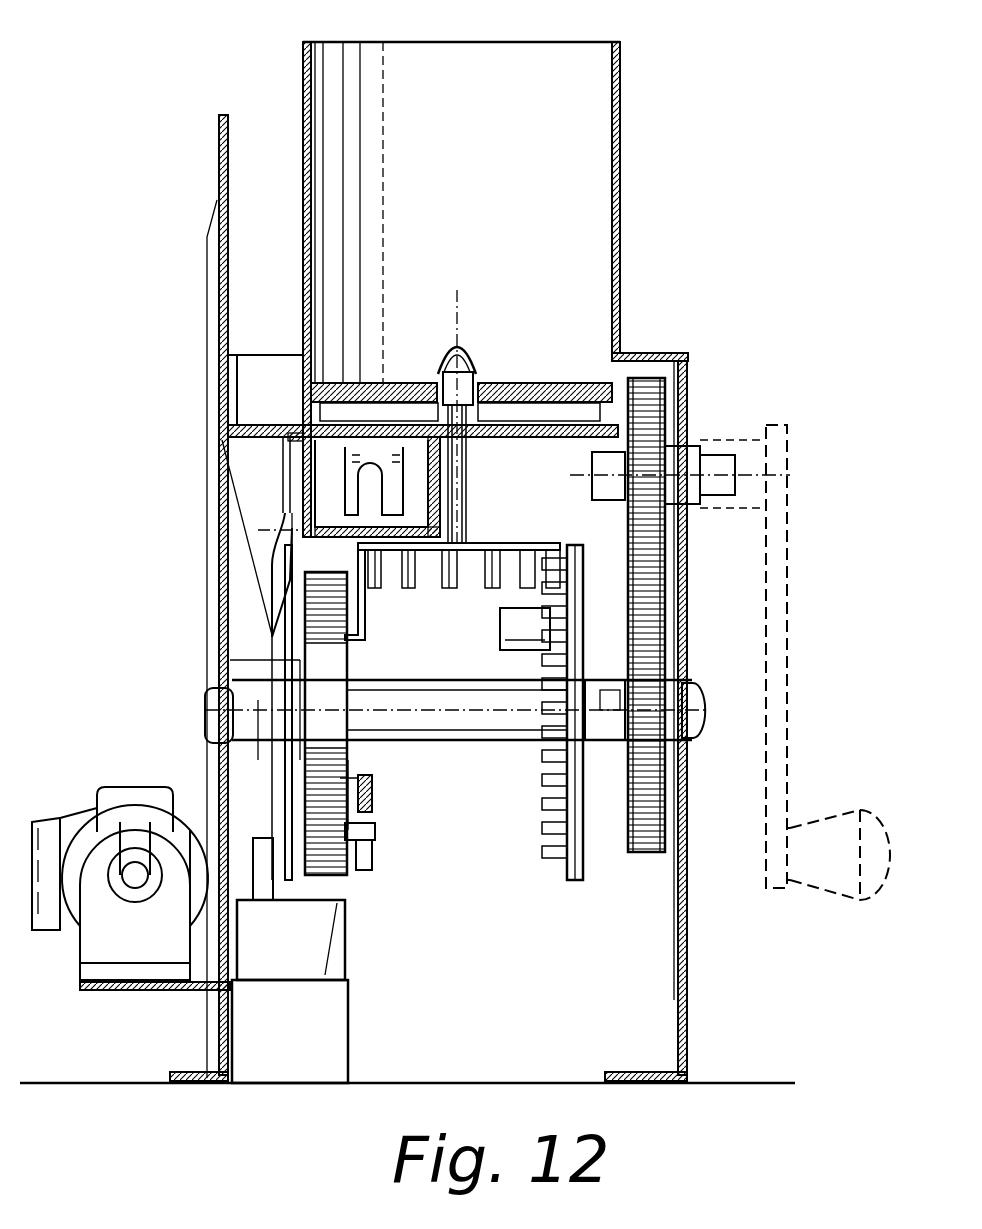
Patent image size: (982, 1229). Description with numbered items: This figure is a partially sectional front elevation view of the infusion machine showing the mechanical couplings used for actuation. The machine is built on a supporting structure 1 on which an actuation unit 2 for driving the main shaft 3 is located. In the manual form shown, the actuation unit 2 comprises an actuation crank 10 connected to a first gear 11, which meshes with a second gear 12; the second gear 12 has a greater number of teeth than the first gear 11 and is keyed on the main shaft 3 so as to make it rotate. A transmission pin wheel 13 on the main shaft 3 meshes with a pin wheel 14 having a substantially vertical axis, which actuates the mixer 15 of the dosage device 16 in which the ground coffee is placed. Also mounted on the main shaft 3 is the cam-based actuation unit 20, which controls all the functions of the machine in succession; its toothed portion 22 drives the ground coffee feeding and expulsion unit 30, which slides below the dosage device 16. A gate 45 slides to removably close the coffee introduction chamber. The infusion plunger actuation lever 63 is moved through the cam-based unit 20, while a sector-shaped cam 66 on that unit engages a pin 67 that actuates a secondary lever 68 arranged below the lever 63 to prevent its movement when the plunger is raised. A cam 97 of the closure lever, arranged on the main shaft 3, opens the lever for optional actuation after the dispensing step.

The supporting structure 1 is at (698, 992).
The actuation unit 2 is at (805, 490).
The main shaft 3 is at (425, 717).
The actuation crank 10 is at (790, 712).
The first gear 11 is at (648, 378).
The second gear 12 is at (650, 785).
The transmission pin wheel 13 is at (543, 792).
The pin wheel 14 is at (500, 553).
The mixer 15 is at (363, 383).
The dosage device 16 is at (618, 173).
The cam-based actuation unit 20 is at (262, 617).
The toothed portion 22 is at (287, 530).
The ground coffee feeding and expulsion unit 30 is at (305, 330).
The gate 45 is at (300, 505).
The infusion plunger actuation lever 63 is at (375, 855).
The sector-shaped cam 66 is at (282, 660).
The pin 67 is at (258, 905).
The secondary lever 68 is at (342, 933).
The cam of the closure lever 97 is at (500, 637).